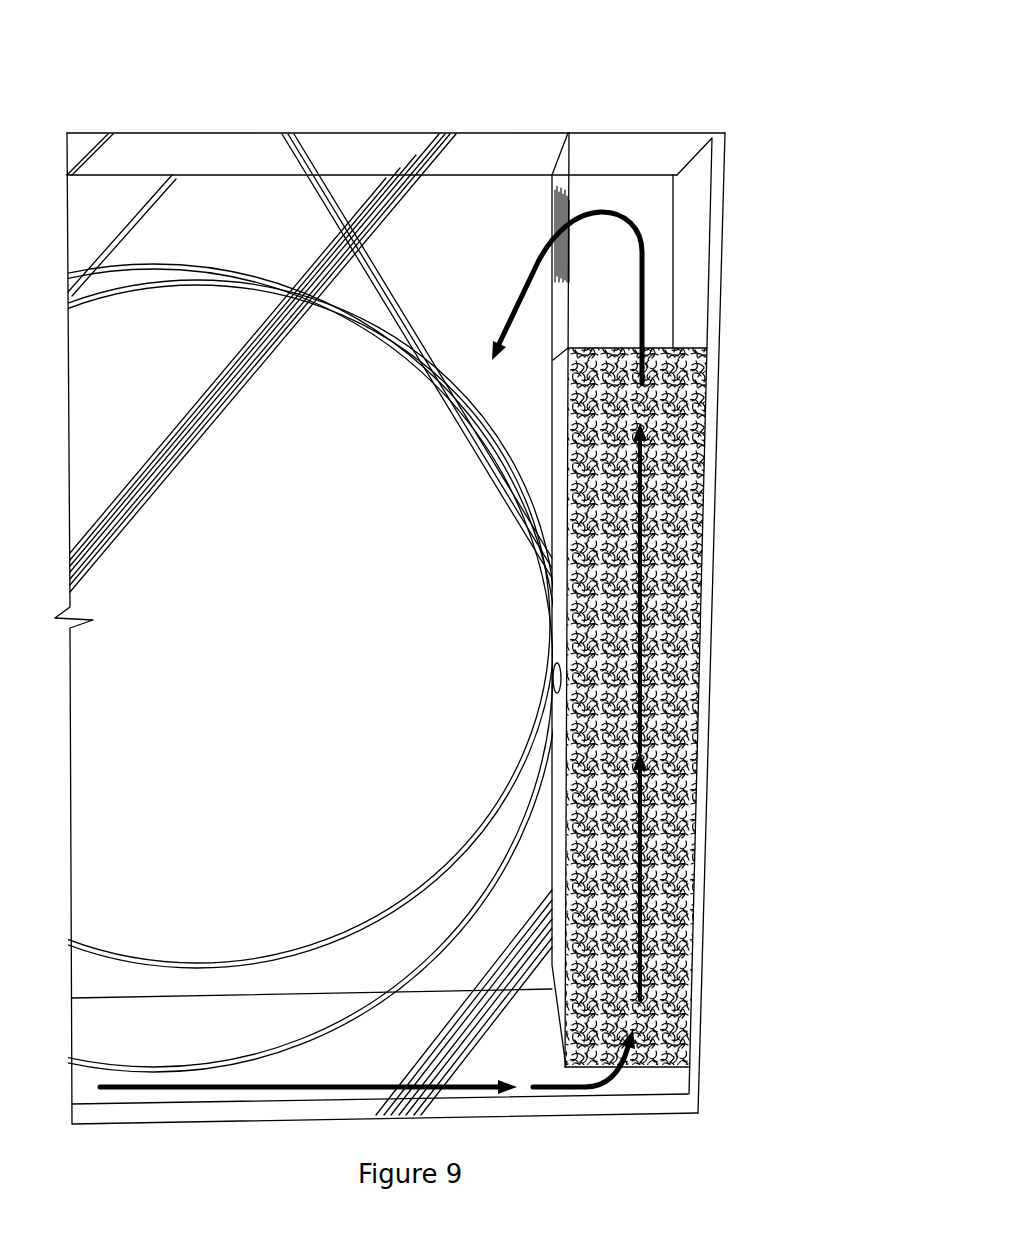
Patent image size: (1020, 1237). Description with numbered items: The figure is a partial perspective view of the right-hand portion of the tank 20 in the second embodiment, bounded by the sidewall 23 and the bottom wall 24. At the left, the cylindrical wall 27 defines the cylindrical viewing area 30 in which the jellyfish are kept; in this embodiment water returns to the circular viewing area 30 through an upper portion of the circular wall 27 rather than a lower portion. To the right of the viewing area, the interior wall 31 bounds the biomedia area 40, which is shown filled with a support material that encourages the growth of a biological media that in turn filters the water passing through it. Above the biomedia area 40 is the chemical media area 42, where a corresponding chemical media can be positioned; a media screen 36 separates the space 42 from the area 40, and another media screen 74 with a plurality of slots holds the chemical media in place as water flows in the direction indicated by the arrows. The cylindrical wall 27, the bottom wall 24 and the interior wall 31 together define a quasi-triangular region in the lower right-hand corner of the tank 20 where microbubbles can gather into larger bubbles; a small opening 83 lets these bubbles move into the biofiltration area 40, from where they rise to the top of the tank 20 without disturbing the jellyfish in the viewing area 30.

The tank 20 is at (623, 106).
The sidewall 23 is at (710, 611).
The bottom wall 24 is at (608, 1103).
The cylindrical wall 27 is at (442, 917).
The cylindrical viewing area 30 is at (286, 699).
The interior wall 31 is at (567, 424).
The media screen 36 is at (690, 348).
The biomedia area 40 is at (683, 496).
The chemical media area 42 is at (655, 216).
The media screen 74 is at (553, 220).
The small opening 83 is at (553, 679).